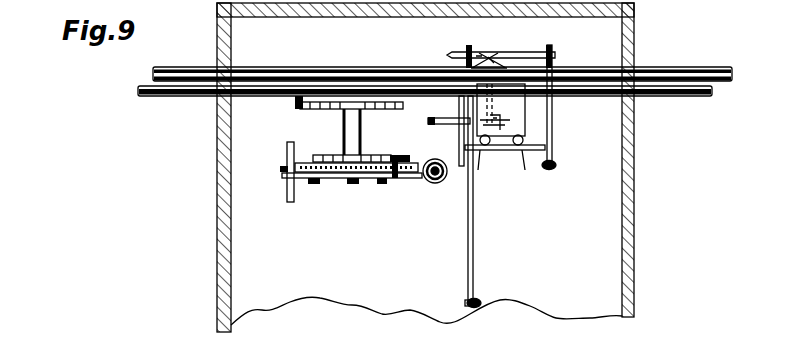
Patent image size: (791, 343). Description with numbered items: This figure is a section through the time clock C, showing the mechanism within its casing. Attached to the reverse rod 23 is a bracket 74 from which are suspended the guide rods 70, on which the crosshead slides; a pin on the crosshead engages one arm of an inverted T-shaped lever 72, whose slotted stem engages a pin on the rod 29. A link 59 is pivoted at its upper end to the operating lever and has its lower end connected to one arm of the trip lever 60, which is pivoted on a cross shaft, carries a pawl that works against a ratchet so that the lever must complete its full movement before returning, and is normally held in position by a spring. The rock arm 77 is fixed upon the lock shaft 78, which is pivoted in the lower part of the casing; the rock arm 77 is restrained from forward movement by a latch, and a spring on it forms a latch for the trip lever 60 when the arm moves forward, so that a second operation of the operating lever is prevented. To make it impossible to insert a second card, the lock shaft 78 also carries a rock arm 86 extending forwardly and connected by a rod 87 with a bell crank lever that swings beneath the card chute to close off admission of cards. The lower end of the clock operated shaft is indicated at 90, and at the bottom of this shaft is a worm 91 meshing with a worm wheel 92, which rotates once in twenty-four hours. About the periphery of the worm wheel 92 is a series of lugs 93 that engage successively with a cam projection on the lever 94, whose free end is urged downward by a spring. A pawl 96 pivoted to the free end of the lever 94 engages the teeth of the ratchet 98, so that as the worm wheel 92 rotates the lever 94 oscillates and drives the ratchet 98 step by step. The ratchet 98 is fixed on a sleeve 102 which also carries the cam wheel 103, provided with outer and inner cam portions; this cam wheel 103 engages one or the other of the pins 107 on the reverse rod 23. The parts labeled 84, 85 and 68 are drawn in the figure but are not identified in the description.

The time clock C is at (636, 199).
The rod 29 is at (664, 68).
The reverse rod 23 is at (654, 97).
The rock arm 77 is at (469, 50).
The lock shaft 78 is at (556, 53).
The hanger 85 is at (488, 62).
The bracket 84 is at (492, 61).
The pins 107 is at (294, 108).
The cam wheel 103 is at (330, 110).
The sleeve 102 is at (363, 126).
The ratchet 98 is at (329, 155).
The pawl 96 is at (400, 155).
The inverted T-shaped lever 72 is at (440, 125).
The worm wheel 92 is at (281, 170).
The lever 94 is at (380, 185).
The lugs 93 is at (317, 185).
The lower end of clock operated shaft 90 is at (438, 160).
The worm 91 is at (437, 183).
The bracket 74 is at (526, 122).
The guide rods 70 is at (485, 146).
The carriage 68 is at (533, 150).
The rock arm 86 is at (554, 142).
The rod 87 is at (556, 168).
The trip lever 60 is at (476, 246).
The link 59 is at (482, 302).